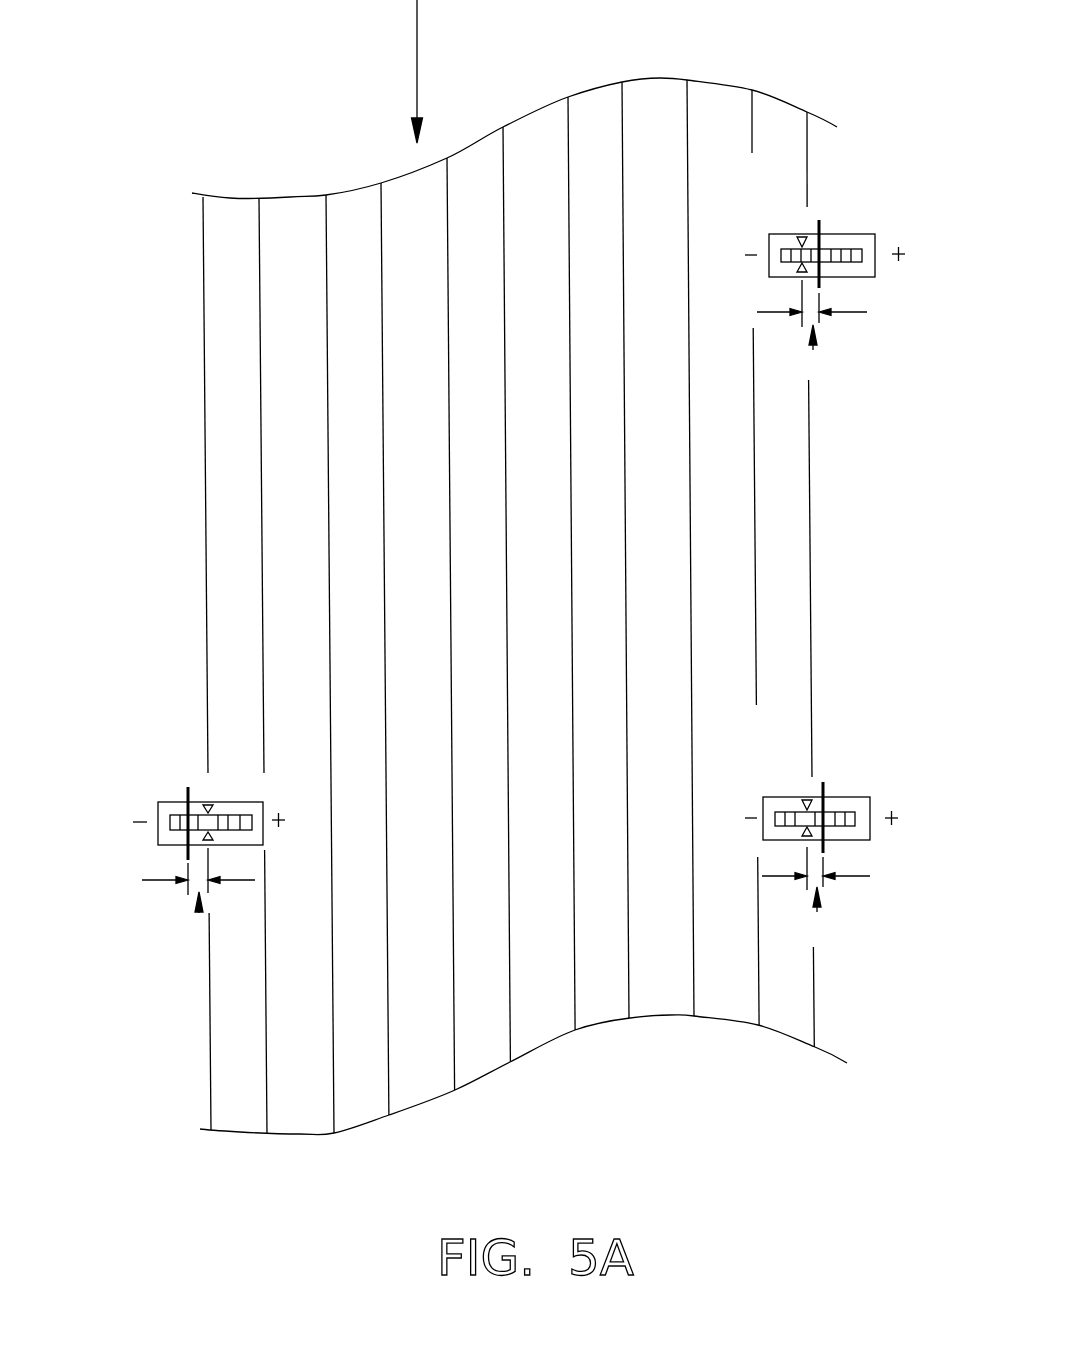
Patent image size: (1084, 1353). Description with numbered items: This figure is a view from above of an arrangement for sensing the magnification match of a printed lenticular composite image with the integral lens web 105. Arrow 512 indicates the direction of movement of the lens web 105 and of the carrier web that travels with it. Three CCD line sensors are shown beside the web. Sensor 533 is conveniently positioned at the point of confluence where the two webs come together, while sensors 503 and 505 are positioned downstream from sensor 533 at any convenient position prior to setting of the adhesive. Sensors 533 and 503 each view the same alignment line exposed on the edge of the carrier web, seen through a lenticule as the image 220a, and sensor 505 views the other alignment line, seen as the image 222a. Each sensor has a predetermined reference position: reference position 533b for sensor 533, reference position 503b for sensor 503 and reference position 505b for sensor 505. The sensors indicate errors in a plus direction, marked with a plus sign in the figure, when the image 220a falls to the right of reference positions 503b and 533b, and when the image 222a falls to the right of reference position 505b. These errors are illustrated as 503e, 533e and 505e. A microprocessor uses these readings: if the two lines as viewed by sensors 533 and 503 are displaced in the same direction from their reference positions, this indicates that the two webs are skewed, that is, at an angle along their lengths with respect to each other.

The integral lens web 105 is at (815, 572).
The arrow 512 is at (417, 60).
The CCD line sensor 533 is at (875, 265).
The reference position 533b is at (802, 234).
The error 533e is at (813, 352).
The CCD line sensor 503 is at (870, 827).
The reference position 503b is at (807, 797).
The error 503e is at (817, 912).
The CCD line sensor 505 is at (158, 837).
The reference position 505b is at (208, 802).
The error 505e is at (199, 913).
The image of alignment line 220a is at (827, 227).
The image of alignment line 222a is at (187, 808).